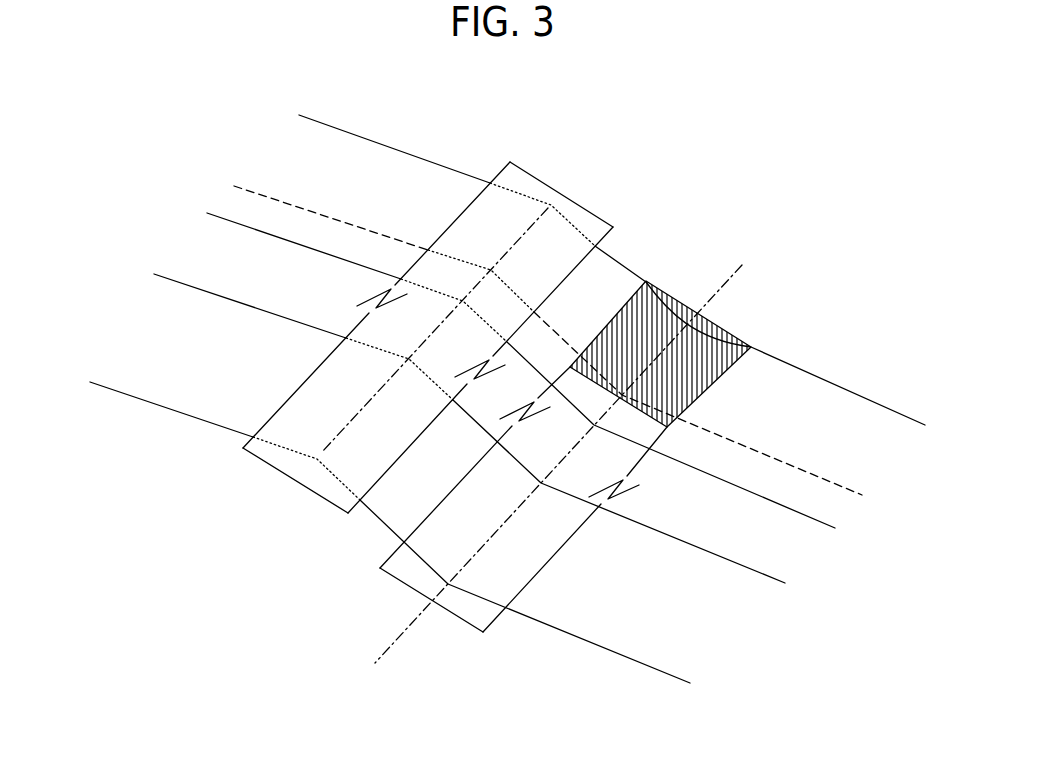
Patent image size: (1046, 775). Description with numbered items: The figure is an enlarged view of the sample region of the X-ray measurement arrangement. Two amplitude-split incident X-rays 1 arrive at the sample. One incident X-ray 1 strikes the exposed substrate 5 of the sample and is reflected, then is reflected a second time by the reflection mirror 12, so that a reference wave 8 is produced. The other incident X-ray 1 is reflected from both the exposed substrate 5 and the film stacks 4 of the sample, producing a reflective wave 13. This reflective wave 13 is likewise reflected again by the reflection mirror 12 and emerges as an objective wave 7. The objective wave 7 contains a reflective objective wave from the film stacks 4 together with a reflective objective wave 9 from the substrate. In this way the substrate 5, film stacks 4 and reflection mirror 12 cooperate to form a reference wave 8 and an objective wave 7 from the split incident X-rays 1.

The incident X-ray 1 is at (778, 402).
The film stacks 4 is at (723, 357).
The exposed substrate 5 is at (440, 543).
The objective wave 7 is at (235, 148).
The reference wave 8 is at (200, 367).
The reflective objective wave 9 is at (300, 225).
The reflection mirror 12 is at (295, 468).
The reflective wave 13 is at (580, 322).